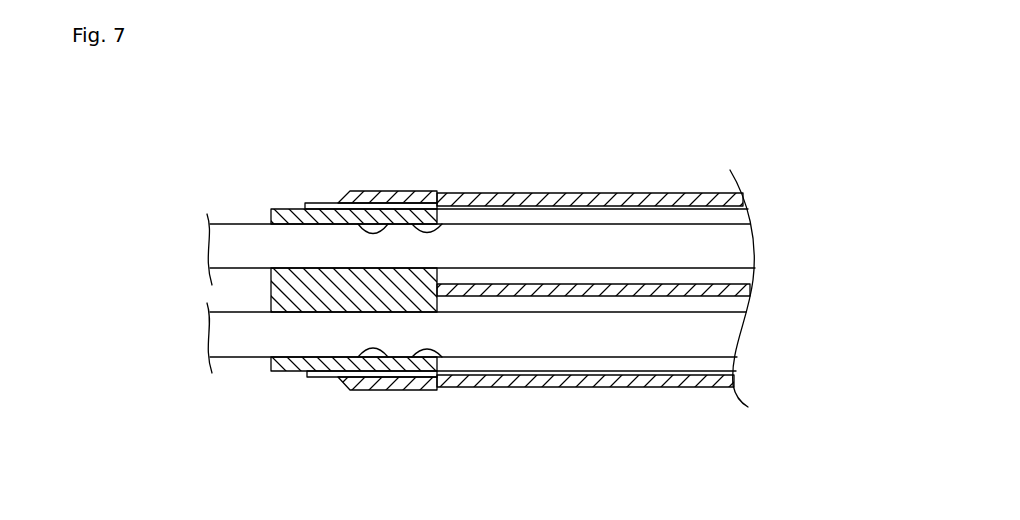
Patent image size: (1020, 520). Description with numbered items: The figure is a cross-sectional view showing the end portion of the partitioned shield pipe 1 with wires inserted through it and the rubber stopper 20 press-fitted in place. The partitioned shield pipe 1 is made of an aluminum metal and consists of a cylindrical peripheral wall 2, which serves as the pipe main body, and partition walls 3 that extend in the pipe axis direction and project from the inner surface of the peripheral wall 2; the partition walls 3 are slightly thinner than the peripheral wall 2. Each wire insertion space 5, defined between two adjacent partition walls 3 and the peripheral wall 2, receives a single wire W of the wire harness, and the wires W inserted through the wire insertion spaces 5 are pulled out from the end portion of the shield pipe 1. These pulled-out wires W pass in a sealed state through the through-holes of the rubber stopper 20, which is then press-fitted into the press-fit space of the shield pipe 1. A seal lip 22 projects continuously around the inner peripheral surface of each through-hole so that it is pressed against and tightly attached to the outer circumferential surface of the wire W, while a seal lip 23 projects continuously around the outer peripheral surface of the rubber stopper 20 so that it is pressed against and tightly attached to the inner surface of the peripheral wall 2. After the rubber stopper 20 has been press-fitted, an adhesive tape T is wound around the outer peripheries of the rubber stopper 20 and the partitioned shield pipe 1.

The partitioned shield pipe 1 is at (568, 170).
The peripheral wall 2 is at (593, 193).
The partition wall 3 is at (673, 290).
The wire insertion space 5 is at (671, 213).
The rubber stopper 20 is at (283, 207).
The seal lip 22 is at (385, 268).
The seal lip 23 is at (398, 200).
The adhesive tape T is at (377, 190).
The wire W is at (222, 243).